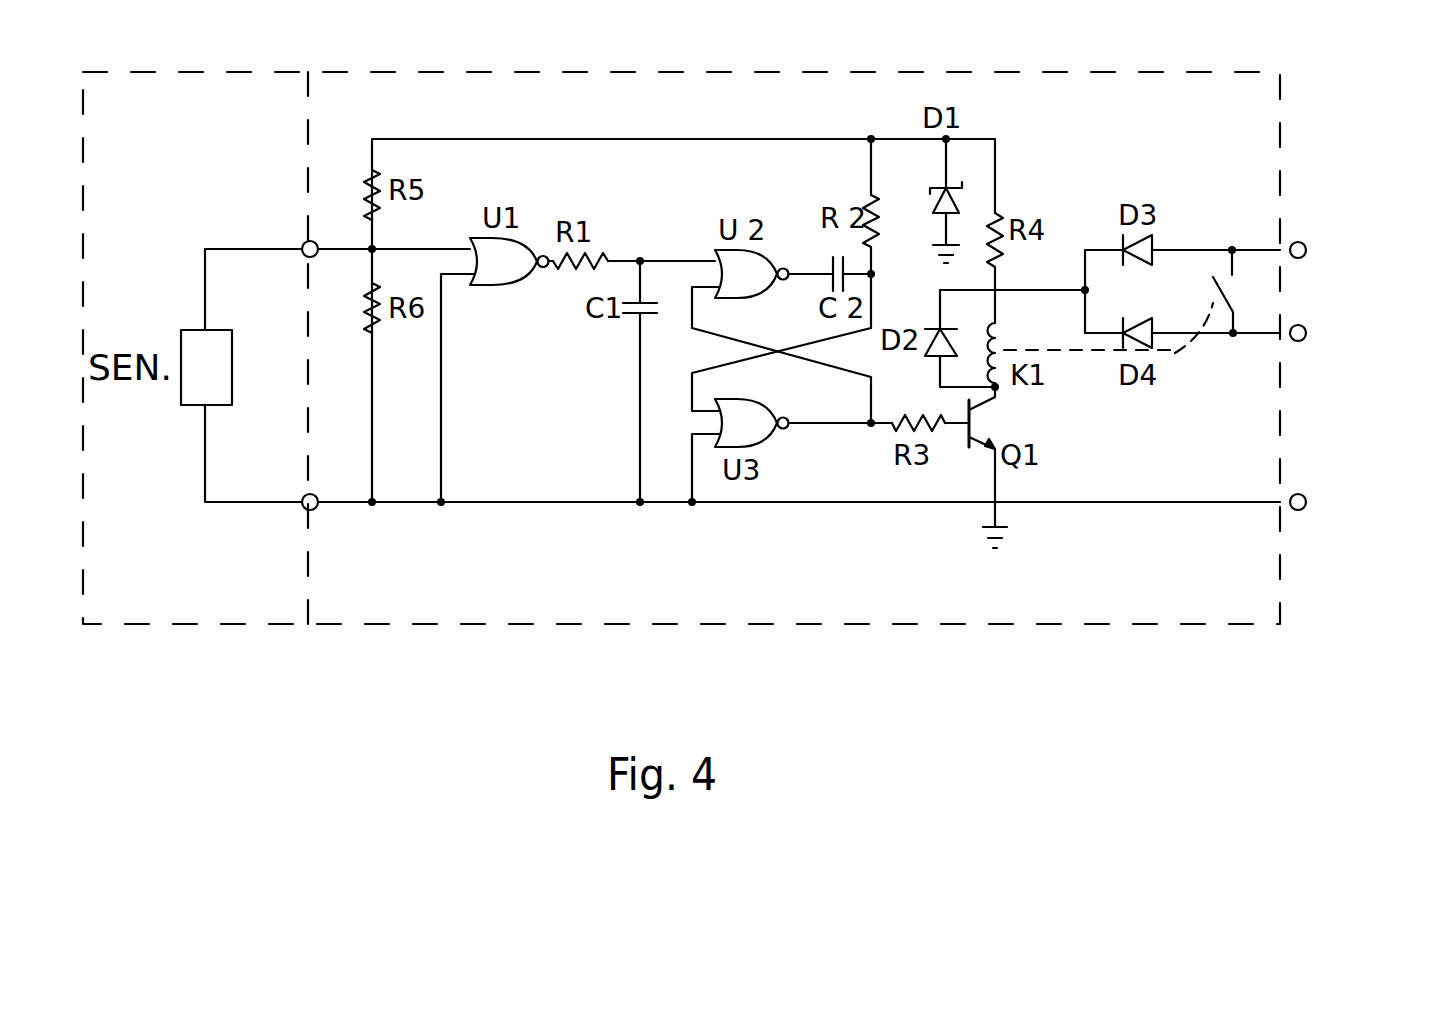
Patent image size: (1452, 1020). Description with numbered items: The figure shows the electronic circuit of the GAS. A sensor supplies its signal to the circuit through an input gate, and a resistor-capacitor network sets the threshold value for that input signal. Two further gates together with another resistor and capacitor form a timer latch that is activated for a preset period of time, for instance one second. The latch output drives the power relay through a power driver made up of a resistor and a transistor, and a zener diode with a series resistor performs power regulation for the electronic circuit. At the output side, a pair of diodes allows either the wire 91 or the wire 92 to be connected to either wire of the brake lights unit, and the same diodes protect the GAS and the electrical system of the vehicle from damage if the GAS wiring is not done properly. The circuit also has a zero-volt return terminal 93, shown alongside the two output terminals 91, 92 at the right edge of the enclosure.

The wire 91 is at (1353, 215).
The wire 92 is at (1355, 374).
The 0 V terminal 93 is at (1334, 526).